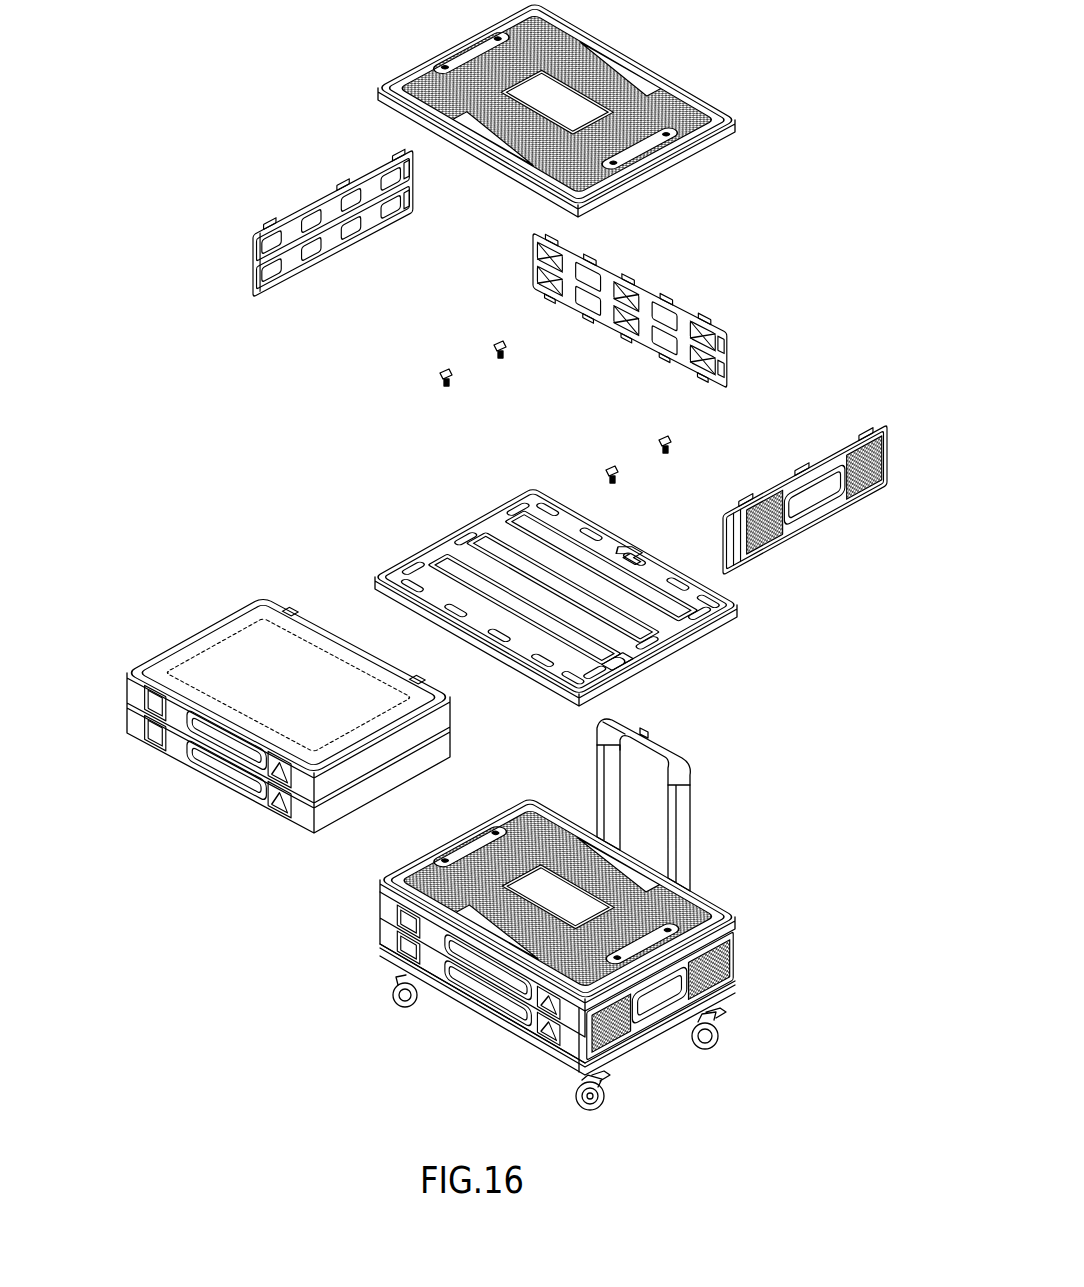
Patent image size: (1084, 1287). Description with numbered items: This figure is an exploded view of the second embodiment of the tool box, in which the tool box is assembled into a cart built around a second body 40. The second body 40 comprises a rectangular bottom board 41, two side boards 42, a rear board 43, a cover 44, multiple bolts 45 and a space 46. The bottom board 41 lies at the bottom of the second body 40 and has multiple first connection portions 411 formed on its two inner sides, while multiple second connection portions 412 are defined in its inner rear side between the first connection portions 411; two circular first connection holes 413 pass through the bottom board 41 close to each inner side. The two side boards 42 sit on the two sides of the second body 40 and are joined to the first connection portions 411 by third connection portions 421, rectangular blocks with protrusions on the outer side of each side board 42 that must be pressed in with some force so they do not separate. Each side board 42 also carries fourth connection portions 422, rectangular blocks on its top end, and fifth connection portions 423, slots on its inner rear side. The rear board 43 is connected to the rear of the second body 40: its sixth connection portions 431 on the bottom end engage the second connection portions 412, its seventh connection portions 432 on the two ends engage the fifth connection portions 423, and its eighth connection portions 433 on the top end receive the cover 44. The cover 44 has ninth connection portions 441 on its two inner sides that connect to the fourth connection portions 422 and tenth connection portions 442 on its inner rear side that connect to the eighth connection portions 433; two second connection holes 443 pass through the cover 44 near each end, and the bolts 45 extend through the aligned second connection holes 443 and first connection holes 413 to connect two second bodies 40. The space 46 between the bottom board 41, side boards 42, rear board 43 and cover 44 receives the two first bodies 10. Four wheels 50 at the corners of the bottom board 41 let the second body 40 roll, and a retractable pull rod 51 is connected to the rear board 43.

The first body 10 is at (210, 647).
The second body 40 is at (820, 265).
The bottom board 41 is at (550, 791).
The first connection portion 411 is at (390, 575).
The second connection portion 412 is at (633, 545).
The first connection hole 413 is at (623, 663).
The side board 42 is at (547, 595).
The third connection portion 421 is at (283, 287).
The fourth connection portion 422 is at (267, 223).
The fifth connection portion 423 is at (417, 205).
The rear board 43 is at (670, 312).
The sixth connection portion 431 is at (625, 345).
The seventh connection portion 432 is at (728, 355).
The eighth connection portion 433 is at (705, 323).
The cover 44 is at (574, 507).
The ninth connection portion 441 is at (608, 207).
The tenth connection portion 442 is at (690, 95).
The second connection hole 443 is at (450, 68).
The bolt 45 is at (445, 389).
The space 46 is at (305, 434).
The wheel 50 is at (610, 1107).
The pull rod 51 is at (690, 837).